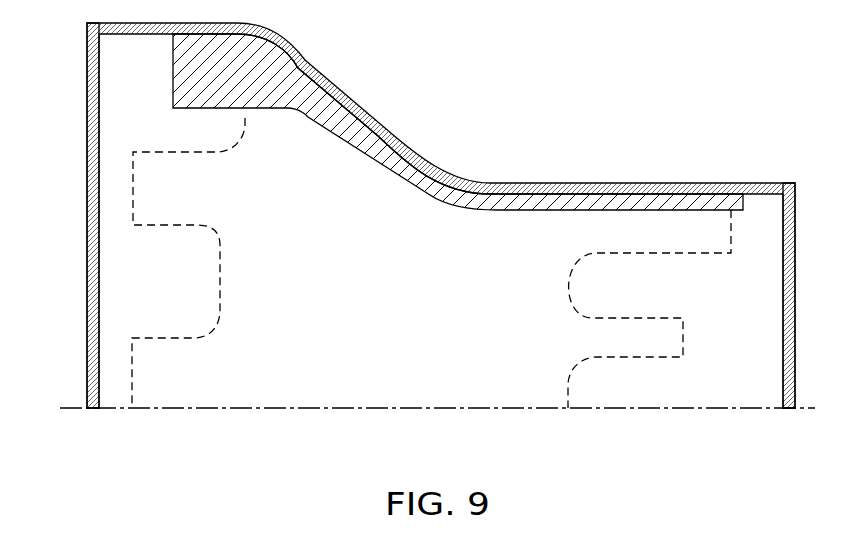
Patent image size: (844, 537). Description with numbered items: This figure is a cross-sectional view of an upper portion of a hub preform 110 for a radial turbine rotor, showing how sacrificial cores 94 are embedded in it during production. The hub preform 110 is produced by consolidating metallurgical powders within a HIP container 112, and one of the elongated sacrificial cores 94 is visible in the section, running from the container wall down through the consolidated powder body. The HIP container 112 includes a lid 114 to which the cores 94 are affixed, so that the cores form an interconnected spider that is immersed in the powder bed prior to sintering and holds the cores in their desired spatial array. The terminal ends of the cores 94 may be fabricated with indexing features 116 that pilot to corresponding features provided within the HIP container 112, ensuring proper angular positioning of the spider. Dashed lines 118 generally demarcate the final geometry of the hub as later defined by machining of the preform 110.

The sacrificial core 94 is at (286, 63).
The hub preform 110 is at (399, 293).
The HIP container 112 is at (648, 183).
The lid 114 is at (87, 72).
The indexing feature 116 is at (764, 190).
The dashed lines 118 is at (220, 238).